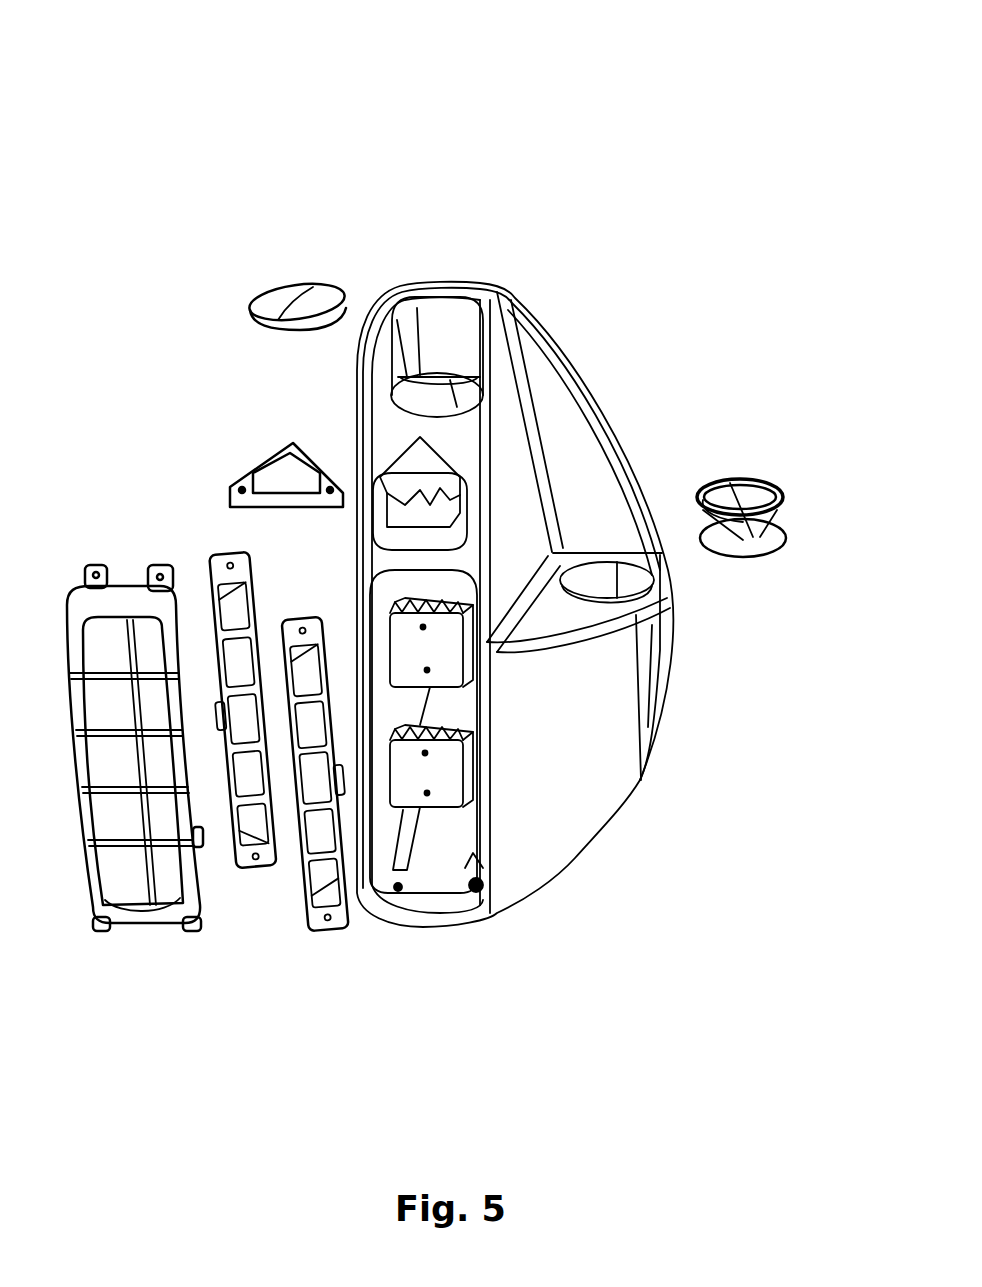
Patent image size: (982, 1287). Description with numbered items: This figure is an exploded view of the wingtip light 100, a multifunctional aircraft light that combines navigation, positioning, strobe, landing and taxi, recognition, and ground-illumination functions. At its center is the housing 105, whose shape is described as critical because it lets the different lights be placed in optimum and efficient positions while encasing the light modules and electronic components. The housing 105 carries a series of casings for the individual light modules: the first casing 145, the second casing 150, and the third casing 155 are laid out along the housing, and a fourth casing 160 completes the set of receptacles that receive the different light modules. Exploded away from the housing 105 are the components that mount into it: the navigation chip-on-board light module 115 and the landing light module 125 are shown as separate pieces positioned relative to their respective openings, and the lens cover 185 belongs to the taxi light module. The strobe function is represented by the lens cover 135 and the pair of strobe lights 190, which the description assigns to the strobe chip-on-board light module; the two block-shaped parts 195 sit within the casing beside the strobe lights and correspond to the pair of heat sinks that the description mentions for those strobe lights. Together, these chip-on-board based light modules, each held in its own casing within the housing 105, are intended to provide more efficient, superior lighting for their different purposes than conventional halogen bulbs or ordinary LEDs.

The wingtip light 100 is at (543, 123).
The housing 105 is at (593, 837).
The navigation chip-on-board (COB) light module 115 is at (275, 477).
The landing light module 125 is at (757, 472).
The lens cover 135 is at (143, 920).
The first casing 145 is at (453, 333).
The second casing 150 is at (447, 487).
The third casing 155 is at (480, 893).
The side cup opening 160 is at (593, 593).
The lens cover 185 is at (308, 290).
The pair of strobe lights 190 is at (263, 862).
The mounting bosses 195 is at (452, 673).